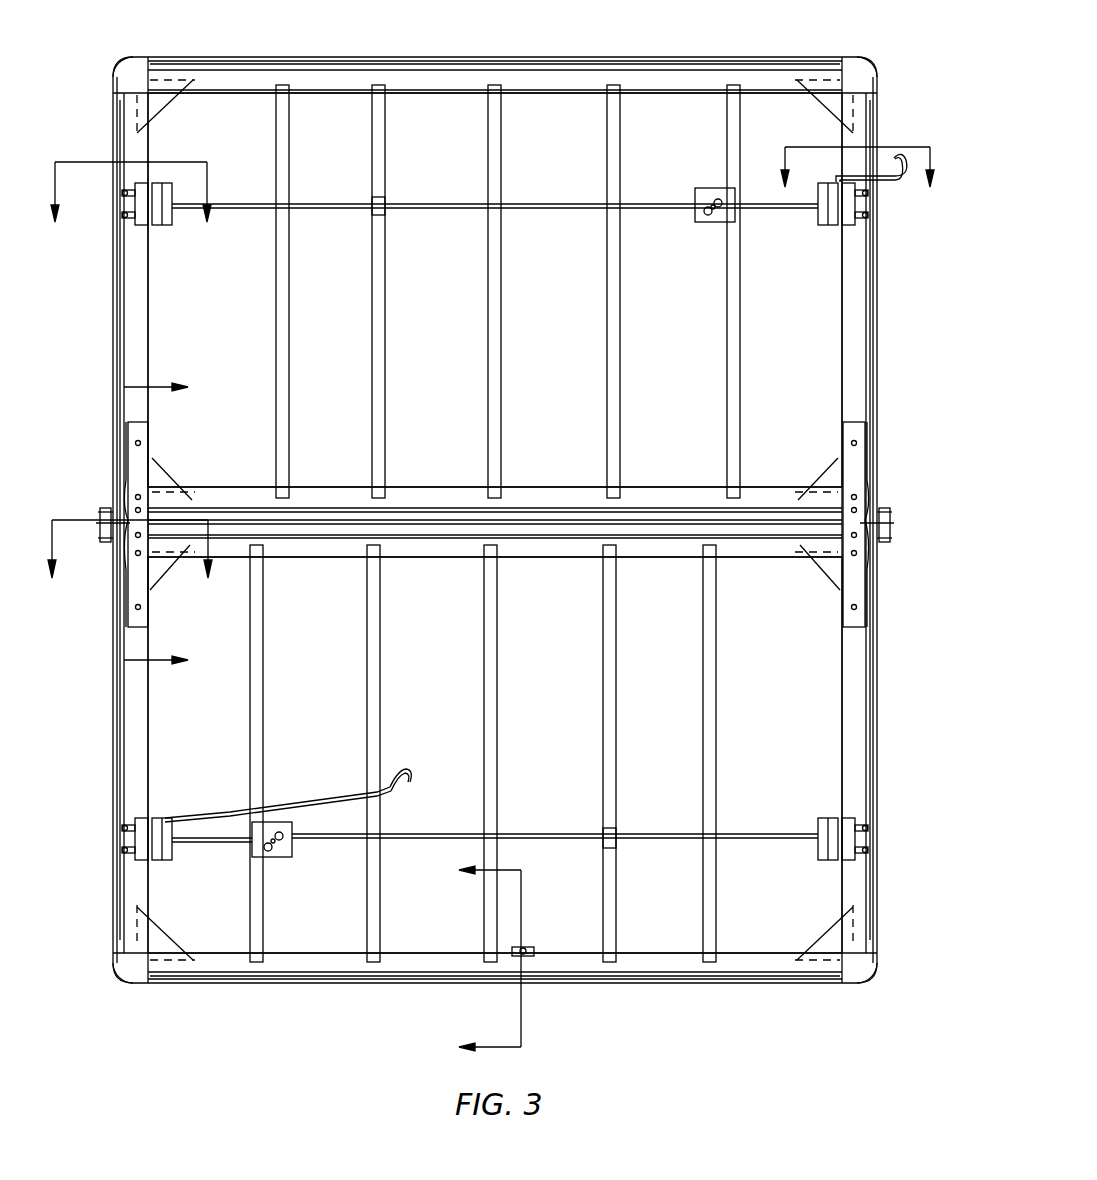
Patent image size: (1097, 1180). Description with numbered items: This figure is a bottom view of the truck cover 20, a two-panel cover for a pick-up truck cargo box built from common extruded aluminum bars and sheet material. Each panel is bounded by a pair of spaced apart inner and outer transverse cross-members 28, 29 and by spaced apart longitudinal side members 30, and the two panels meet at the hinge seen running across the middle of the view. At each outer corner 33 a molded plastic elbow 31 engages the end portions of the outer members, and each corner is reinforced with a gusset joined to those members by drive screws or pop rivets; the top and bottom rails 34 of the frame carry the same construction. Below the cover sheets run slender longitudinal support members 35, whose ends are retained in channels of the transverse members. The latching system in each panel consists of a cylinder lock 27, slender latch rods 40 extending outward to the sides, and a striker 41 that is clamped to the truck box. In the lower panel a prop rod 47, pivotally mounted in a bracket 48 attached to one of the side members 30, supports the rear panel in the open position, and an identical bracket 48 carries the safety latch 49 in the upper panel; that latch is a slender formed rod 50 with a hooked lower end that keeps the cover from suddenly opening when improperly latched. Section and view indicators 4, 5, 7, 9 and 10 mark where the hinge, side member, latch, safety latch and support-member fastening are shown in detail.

The truck cover 20 is at (595, 56).
The cylinder lock 27 is at (708, 220).
The inner transverse cross-member 28 is at (637, 487).
The outer transverse cross-member 29 is at (637, 96).
The longitudinal side member 30 is at (145, 358).
The molded plastic elbow 31 is at (134, 54).
The outer corner 33 is at (170, 98).
The top/bottom rail 34 is at (450, 56).
The longitudinal support member 35 is at (291, 344).
The latch rod 40 is at (410, 206).
The striker 41 is at (855, 226).
The prop rod 47 is at (413, 778).
The bracket 48 is at (232, 808).
The safety latch 49 is at (900, 168).
The formed rod 50 is at (898, 182).
The section line 4- 4 is at (127, 567).
The view line 5 is at (136, 525).
The section line 7- 7 is at (130, 177).
The section line 9- 9 is at (856, 151).
The section line 10- 10 is at (509, 959).